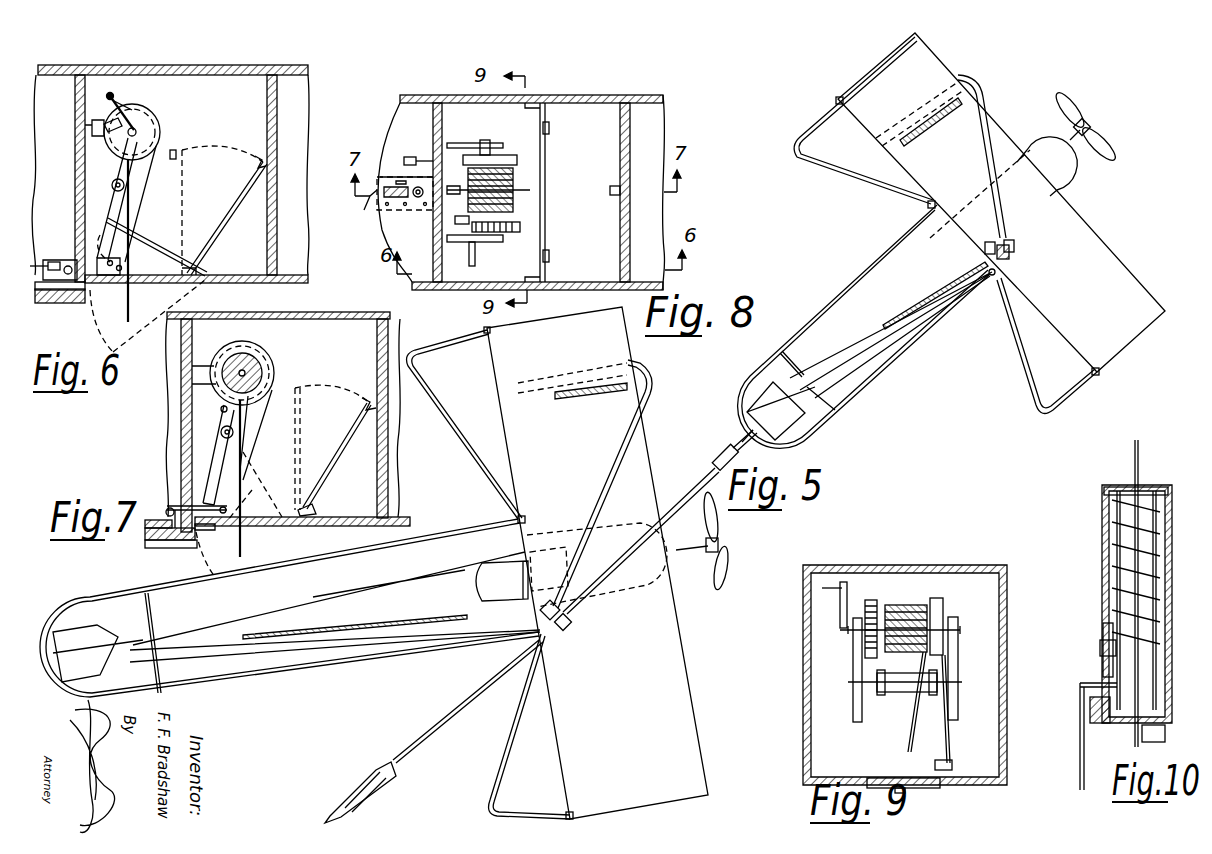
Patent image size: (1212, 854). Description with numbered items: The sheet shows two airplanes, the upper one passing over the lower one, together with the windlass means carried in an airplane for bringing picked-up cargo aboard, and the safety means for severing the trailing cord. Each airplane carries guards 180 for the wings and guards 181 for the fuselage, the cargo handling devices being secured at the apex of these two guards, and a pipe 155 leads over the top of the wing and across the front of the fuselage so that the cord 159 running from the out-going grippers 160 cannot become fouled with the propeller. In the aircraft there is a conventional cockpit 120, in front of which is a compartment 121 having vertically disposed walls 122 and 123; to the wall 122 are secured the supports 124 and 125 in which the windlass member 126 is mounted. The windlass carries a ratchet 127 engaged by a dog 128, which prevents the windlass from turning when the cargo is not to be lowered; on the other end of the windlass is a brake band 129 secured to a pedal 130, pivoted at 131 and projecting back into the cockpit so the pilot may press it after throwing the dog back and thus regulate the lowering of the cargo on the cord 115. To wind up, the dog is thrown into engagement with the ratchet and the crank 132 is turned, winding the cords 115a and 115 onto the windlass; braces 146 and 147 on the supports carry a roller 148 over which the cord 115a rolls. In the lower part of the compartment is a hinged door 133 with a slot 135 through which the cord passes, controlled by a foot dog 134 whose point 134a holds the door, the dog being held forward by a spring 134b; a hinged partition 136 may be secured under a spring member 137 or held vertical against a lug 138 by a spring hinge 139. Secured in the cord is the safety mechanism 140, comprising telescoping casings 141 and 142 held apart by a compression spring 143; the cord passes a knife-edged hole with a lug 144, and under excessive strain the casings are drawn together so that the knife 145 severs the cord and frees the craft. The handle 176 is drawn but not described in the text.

In FIG. 5, the cord 115 is at (692, 445).
In FIG. 10, the cord 115 is at (1080, 712).
In FIG. 6, the cord portion 115a is at (132, 224).
In FIG. 7, the cord portion 115a is at (243, 538).
In FIG. 5, the cord portion 115a is at (740, 428).
In FIG. 9, the cord portion 115a is at (908, 712).
In FIG. 10, the cord portion 115a is at (1132, 452).
In FIG. 6, the cockpit 120 is at (60, 118).
In FIG. 5, the cockpit 120 is at (480, 586).
In FIG. 6, the compartment 121 is at (173, 174).
In FIG. 8, the compartment 121 is at (592, 241).
In FIG. 6, the wall 122 is at (108, 97).
In FIG. 8, the wall 122 is at (436, 268).
In FIG. 6, the wall 123 is at (278, 128).
In FIG. 8, the wall 123 is at (632, 218).
In FIG. 8, the support 124 is at (460, 143).
In FIG. 8, the support 125 is at (458, 243).
In FIG. 6, the windlass member 126 is at (150, 108).
In FIG. 7, the windlass member 126 is at (264, 352).
In FIG. 8, the windlass member 126 is at (520, 215).
In FIG. 9, the windlass member 126 is at (884, 604).
In FIG. 8, the ratchet 127 is at (518, 234).
In FIG. 6, the dog 128 is at (104, 115).
In FIG. 8, the dog 128 is at (458, 212).
In FIG. 6, the brake band 129 is at (142, 192).
In FIG. 7, the brake band 129 is at (284, 380).
In FIG. 9, the brake band 129 is at (950, 720).
In FIG. 6, the pedal 130 is at (50, 258).
In FIG. 7, the pedal 130 is at (210, 532).
In FIG. 8, the pedal 130 is at (412, 156).
In FIG. 9, the pedal 130 is at (952, 758).
In FIG. 7, the pivot 131 is at (263, 483).
In FIG. 6, the crank 132 is at (118, 98).
In FIG. 8, the crank 132 is at (486, 266).
In FIG. 9, the crank 132 is at (830, 596).
In FIG. 6, the hinged door 133 is at (133, 340).
In FIG. 7, the hinged door 133 is at (258, 500).
In FIG. 8, the hinged door 133 is at (497, 181).
In FIG. 6, the foot dog 134 is at (100, 306).
In FIG. 7, the foot dog 134 is at (150, 508).
In FIG. 8, the foot dog 134 is at (426, 206).
In FIG. 7, the point 134a is at (170, 542).
In FIG. 8, the point 134a is at (436, 174).
In FIG. 6, the spring 134b is at (72, 304).
In FIG. 7, the spring 134b is at (146, 546).
In FIG. 8, the spring 134b is at (378, 212).
In FIG. 8, the slot 135 is at (406, 169).
In FIG. 9, the slot 135 is at (928, 788).
In FIG. 6, the hinged partition 136 is at (228, 190).
In FIG. 7, the hinged partition 136 is at (342, 440).
In FIG. 8, the hinged partition 136 is at (548, 160).
In FIG. 6, the spring member 137 is at (256, 152).
In FIG. 7, the spring member 137 is at (366, 396).
In FIG. 8, the spring member 137 is at (612, 197).
In FIG. 6, the lug 138 is at (174, 146).
In FIG. 7, the spring hinge 139 is at (316, 506).
In FIG. 5, the safety mechanism 140 is at (722, 450).
In FIG. 10, the safety mechanism 140 is at (1160, 480).
In FIG. 10, the telescoping casing 141 is at (1106, 492).
In FIG. 10, the telescoping casing 142 is at (1170, 738).
In FIG. 10, the compression spring 143 is at (1112, 516).
In FIG. 10, the lug 144 is at (1100, 724).
In FIG. 10, the knife 145 is at (1103, 660).
In FIG. 9, the brace 146 is at (853, 660).
In FIG. 9, the brace 147 is at (958, 656).
In FIG. 6, the roller 148 is at (114, 195).
In FIG. 7, the roller 148 is at (226, 442).
In FIG. 9, the roller 148 is at (870, 696).
In FIG. 5, the pipe 155 is at (605, 486).
In FIG. 5, the cord 159 is at (650, 378).
In FIG. 5, the out-going grippers 160 is at (556, 632).
In FIG. 5, the handle 176 is at (362, 762).
In FIG. 5, the guards 180 is at (497, 425).
In FIG. 5, the guards 181 is at (443, 534).